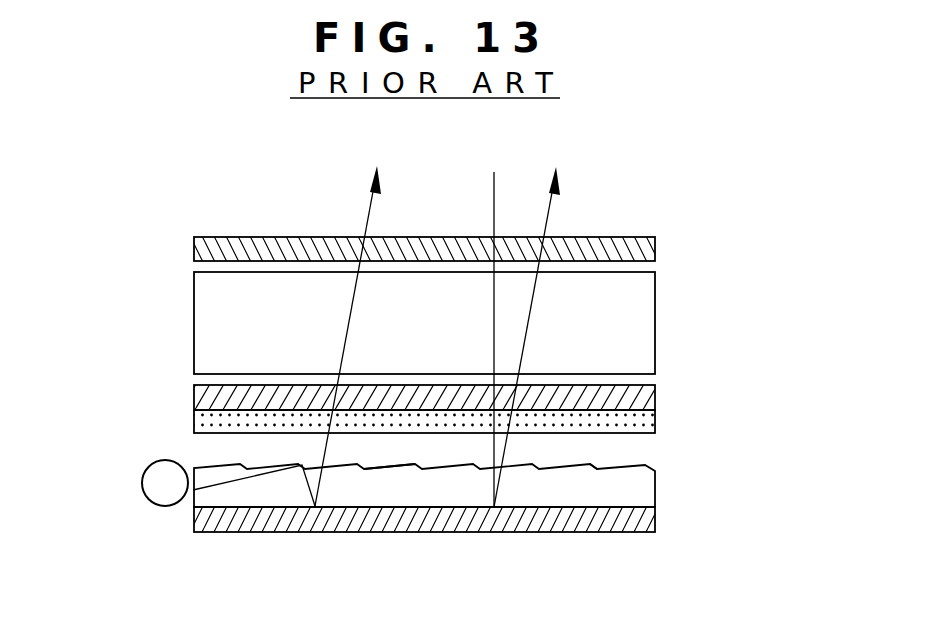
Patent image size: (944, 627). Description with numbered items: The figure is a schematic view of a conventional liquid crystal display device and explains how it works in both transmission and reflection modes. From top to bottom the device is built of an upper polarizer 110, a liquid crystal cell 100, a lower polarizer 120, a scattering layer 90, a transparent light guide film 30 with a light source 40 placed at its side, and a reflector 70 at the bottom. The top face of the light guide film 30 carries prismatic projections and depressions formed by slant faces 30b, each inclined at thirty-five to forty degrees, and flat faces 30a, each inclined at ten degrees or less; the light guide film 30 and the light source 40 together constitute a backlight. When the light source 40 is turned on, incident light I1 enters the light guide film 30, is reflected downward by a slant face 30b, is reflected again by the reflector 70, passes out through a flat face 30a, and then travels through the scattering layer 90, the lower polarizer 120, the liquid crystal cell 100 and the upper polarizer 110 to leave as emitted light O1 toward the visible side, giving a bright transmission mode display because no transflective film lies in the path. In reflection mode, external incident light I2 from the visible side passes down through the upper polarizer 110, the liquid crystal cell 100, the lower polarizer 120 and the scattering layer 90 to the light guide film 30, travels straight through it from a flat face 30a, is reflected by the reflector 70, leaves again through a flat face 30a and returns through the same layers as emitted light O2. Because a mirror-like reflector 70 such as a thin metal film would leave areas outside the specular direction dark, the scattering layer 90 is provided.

The upper polarizer 110 is at (652, 250).
The liquid crystal cell 100 is at (647, 328).
The lower polarizer 120 is at (652, 398).
The scattering layer 90 is at (652, 422).
The transparent light guide film 30 is at (647, 488).
The flat face 30a is at (390, 470).
The slant face 30b is at (586, 470).
The reflector 70 is at (652, 520).
The light source 40 is at (157, 485).
The incident light I1 is at (246, 477).
The incident light I2 is at (494, 206).
The emitted light O1 is at (367, 212).
The emitted light O2 is at (553, 210).